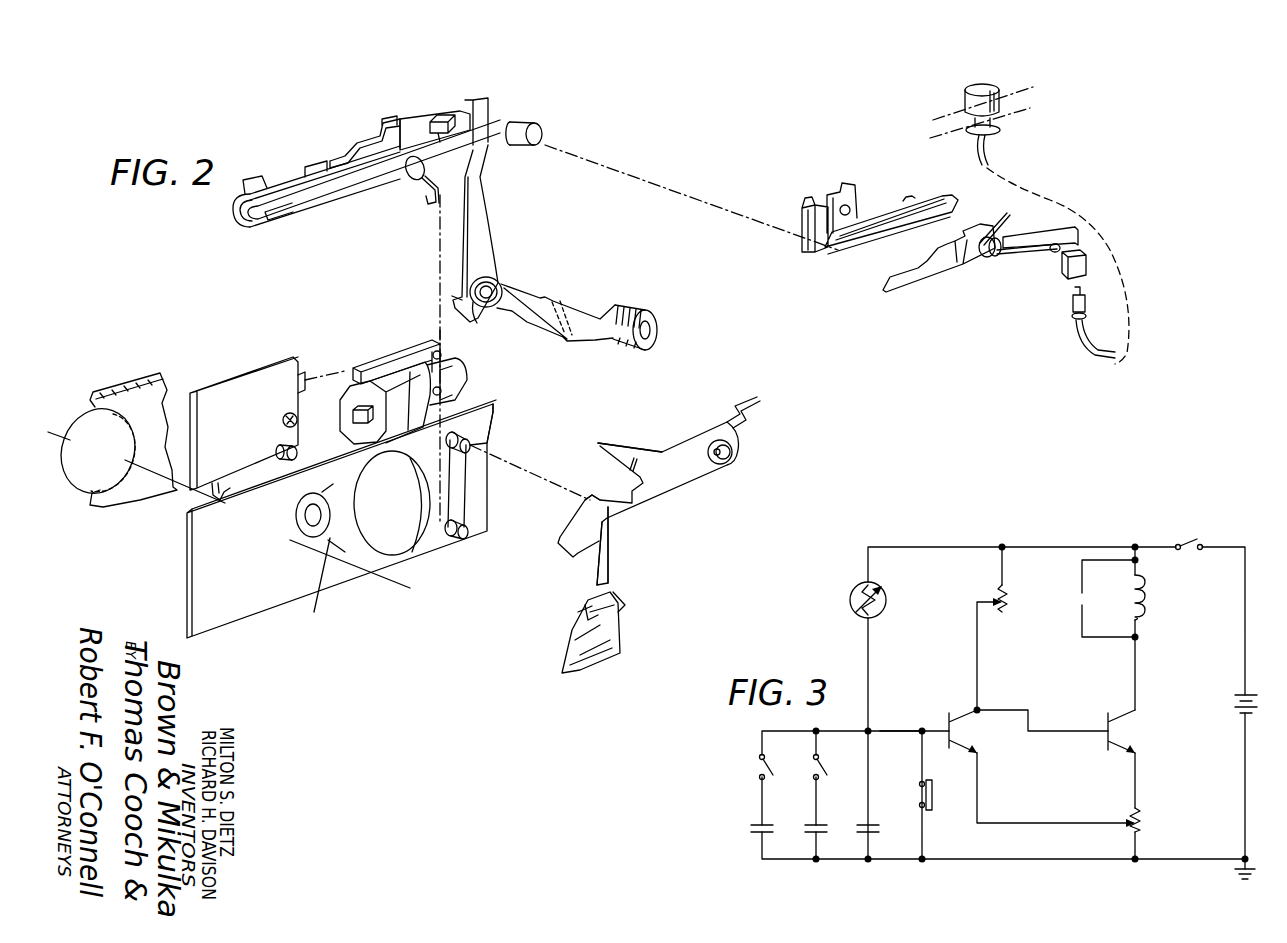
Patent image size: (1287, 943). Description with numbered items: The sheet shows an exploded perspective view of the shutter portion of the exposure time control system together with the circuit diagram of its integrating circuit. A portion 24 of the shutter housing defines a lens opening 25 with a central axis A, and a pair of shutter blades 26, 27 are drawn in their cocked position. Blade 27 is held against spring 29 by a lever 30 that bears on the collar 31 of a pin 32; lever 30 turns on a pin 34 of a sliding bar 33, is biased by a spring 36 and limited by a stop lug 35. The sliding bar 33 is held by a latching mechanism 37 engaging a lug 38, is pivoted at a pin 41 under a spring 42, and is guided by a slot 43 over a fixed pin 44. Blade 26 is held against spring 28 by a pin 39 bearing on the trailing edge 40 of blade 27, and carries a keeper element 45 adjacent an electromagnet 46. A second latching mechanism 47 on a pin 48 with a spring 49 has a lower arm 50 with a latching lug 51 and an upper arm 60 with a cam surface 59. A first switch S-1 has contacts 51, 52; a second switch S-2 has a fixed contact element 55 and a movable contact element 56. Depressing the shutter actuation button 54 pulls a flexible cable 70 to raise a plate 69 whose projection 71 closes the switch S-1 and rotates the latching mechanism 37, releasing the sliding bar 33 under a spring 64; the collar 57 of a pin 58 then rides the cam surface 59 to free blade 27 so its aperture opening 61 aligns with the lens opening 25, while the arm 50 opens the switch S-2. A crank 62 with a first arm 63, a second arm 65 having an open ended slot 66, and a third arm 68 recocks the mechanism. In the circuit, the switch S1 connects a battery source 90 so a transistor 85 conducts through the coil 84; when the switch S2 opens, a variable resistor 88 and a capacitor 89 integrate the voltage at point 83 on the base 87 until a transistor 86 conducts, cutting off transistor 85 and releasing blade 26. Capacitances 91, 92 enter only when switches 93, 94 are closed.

In FIG. 2, the portion of shutter housing 24 is at (162, 375).
In FIG. 2, the lens opening 25 is at (88, 490).
In FIG. 2, the shutter blade 26 is at (258, 376).
In FIG. 2, the shutter blade 27 is at (223, 565).
In FIG. 2, the spring 28 is at (247, 478).
In FIG. 2, the spring 29 is at (318, 608).
In FIG. 2, the lever 30 is at (428, 199).
In FIG. 2, the collar 31 is at (494, 410).
In FIG. 2, the pin 32 is at (471, 442).
In FIG. 2, the sliding bar 33 is at (365, 150).
In FIG. 2, the pin 34 is at (410, 180).
In FIG. 2, the stop lug 35 is at (388, 126).
In FIG. 2, the spring 36 is at (295, 178).
In FIG. 2, the latching mechanism 37 is at (912, 281).
In FIG. 2, the lug 38 is at (440, 116).
In FIG. 2, the pin 39 is at (283, 420).
In FIG. 2, the trailing edge 40 is at (469, 497).
In FIG. 2, the pin 41 is at (993, 256).
In FIG. 2, the spring 42 is at (1010, 225).
In FIG. 2, the slot 43 is at (283, 214).
In FIG. 2, the pin 44 is at (262, 228).
In FIG. 2, the keeper element 45 is at (306, 378).
In FIG. 2, the electromagnet 46 is at (427, 338).
In FIG. 2, the latching mechanism 47 is at (687, 474).
In FIG. 2, the pin 48 is at (733, 457).
In FIG. 2, the spring 49 is at (758, 399).
In FIG. 2, the lower arm 50 is at (612, 569).
In FIG. 2, the latching lug 51 is at (583, 502).
In FIG. 2, the contact 52 is at (903, 224).
In FIG. 2, the shutter actuation button 54 is at (958, 101).
In FIG. 2, the fixed contact element 55 is at (588, 609).
In FIG. 2, the movable contact element 56 is at (615, 593).
In FIG. 2, the collar 57 is at (542, 134).
In FIG. 2, the pin 58 is at (512, 123).
In FIG. 2, the cam surface 59 is at (644, 455).
In FIG. 2, the upper arm 60 is at (612, 459).
In FIG. 2, the aperture opening 61 is at (397, 504).
In FIG. 2, the crank 62 is at (518, 282).
In FIG. 2, the first arm 63 is at (582, 323).
In FIG. 2, the spring 64 is at (503, 285).
In FIG. 2, the second arm 65 is at (485, 240).
In FIG. 2, the open ended slot 66 is at (486, 108).
In FIG. 2, the third arm 68 is at (452, 296).
In FIG. 2, the plate 69 is at (1061, 276).
In FIG. 2, the flexible cable 70 is at (990, 160).
In FIG. 2, the projection 71 is at (1055, 257).
In FIG. 2, the coil 84 is at (393, 415).
In FIG. 3, the coil 84 is at (1141, 605).
In FIG. 2, the axis A is at (72, 440).
In FIG. 2, the first switch S-1 is at (885, 190).
In FIG. 2, the second switch S-2 is at (619, 652).
In FIG. 3, the point 83 is at (900, 745).
In FIG. 3, the transistor 85 is at (1126, 728).
In FIG. 3, the transistor 86 is at (953, 694).
In FIG. 3, the base 87 is at (948, 720).
In FIG. 3, the variable resistor 88 is at (884, 595).
In FIG. 3, the capacitor 89 is at (872, 823).
In FIG. 3, the battery source 90 is at (1252, 700).
In FIG. 3, the capacitance 91 is at (766, 823).
In FIG. 3, the capacitance 92 is at (820, 823).
In FIG. 3, the switch 93 is at (758, 770).
In FIG. 3, the switch 94 is at (812, 770).
In FIG. 3, the first switch S1 is at (1186, 530).
In FIG. 3, the second switch S2 is at (941, 795).